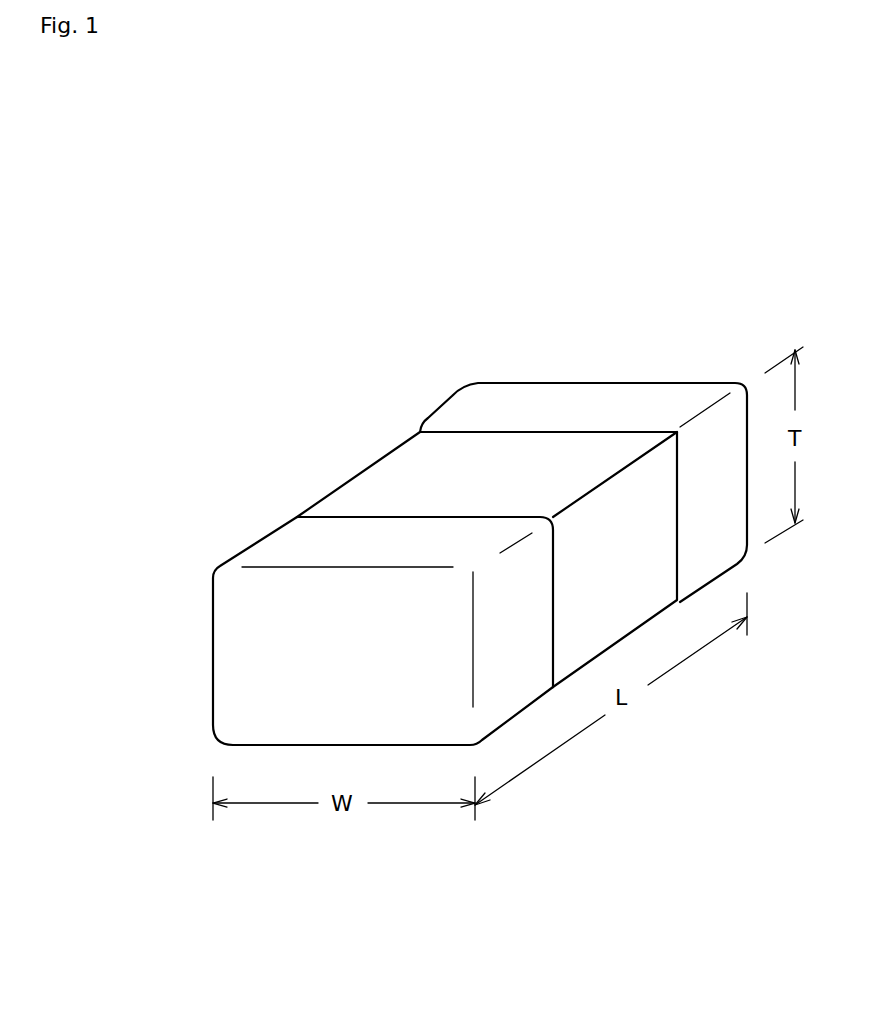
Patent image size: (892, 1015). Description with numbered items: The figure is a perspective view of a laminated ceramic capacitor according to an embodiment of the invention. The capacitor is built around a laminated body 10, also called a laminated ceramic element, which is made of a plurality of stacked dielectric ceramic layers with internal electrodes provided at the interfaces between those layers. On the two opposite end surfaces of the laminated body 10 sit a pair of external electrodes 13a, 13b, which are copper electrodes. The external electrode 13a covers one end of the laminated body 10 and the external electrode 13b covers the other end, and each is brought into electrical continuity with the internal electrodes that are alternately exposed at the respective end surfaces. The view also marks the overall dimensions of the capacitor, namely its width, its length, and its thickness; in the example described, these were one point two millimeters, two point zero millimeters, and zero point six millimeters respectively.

The laminated body 10 is at (372, 458).
The external electrode 13a is at (300, 638).
The external electrode 13b is at (578, 383).